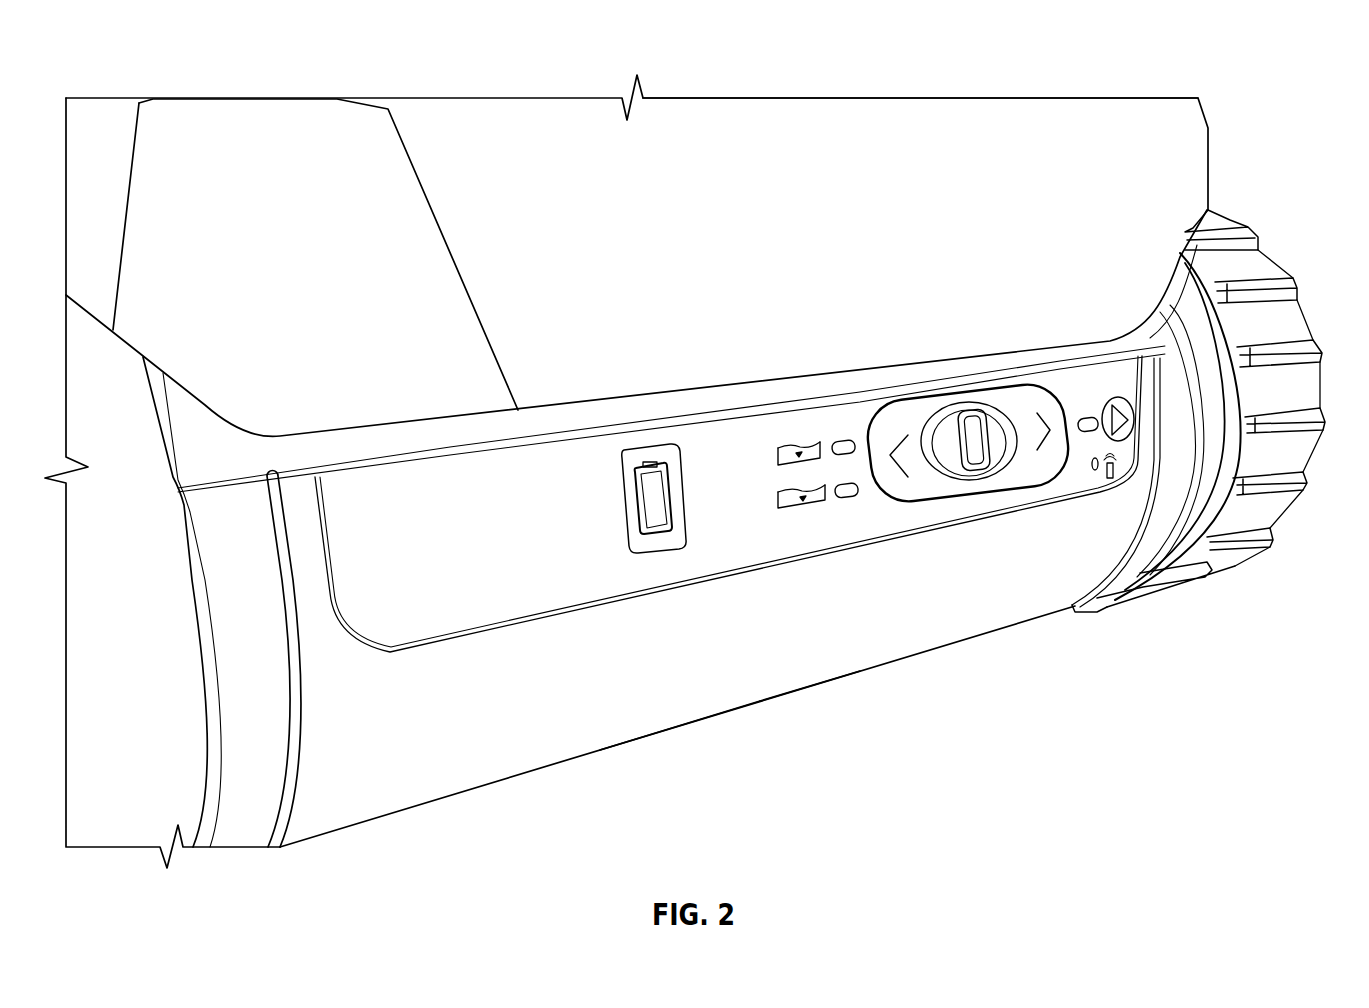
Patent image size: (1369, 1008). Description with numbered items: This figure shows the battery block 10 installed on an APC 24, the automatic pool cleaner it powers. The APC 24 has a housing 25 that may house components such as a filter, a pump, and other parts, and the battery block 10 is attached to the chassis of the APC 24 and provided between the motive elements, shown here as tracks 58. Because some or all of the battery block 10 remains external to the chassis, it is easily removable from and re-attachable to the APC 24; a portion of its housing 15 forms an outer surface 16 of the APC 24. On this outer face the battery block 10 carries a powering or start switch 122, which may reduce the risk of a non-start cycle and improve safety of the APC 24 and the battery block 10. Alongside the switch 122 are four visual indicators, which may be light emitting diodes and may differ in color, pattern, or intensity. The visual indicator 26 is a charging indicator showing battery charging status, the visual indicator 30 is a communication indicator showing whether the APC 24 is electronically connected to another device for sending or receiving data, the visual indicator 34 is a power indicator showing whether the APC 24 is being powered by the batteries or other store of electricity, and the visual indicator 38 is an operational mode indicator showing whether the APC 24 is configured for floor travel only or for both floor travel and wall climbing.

The battery block 10 is at (852, 627).
The housing 15 is at (722, 688).
The outer surface 16 is at (793, 675).
The APC 24 is at (1077, 44).
The housing 25 is at (1055, 115).
The visual indicator 26 is at (653, 522).
The visual indicator 30 is at (1110, 477).
The visual indicator 34 is at (1128, 421).
The visual indicator 38 is at (843, 440).
The tracks 58 is at (1258, 512).
The start switch 122 is at (982, 467).